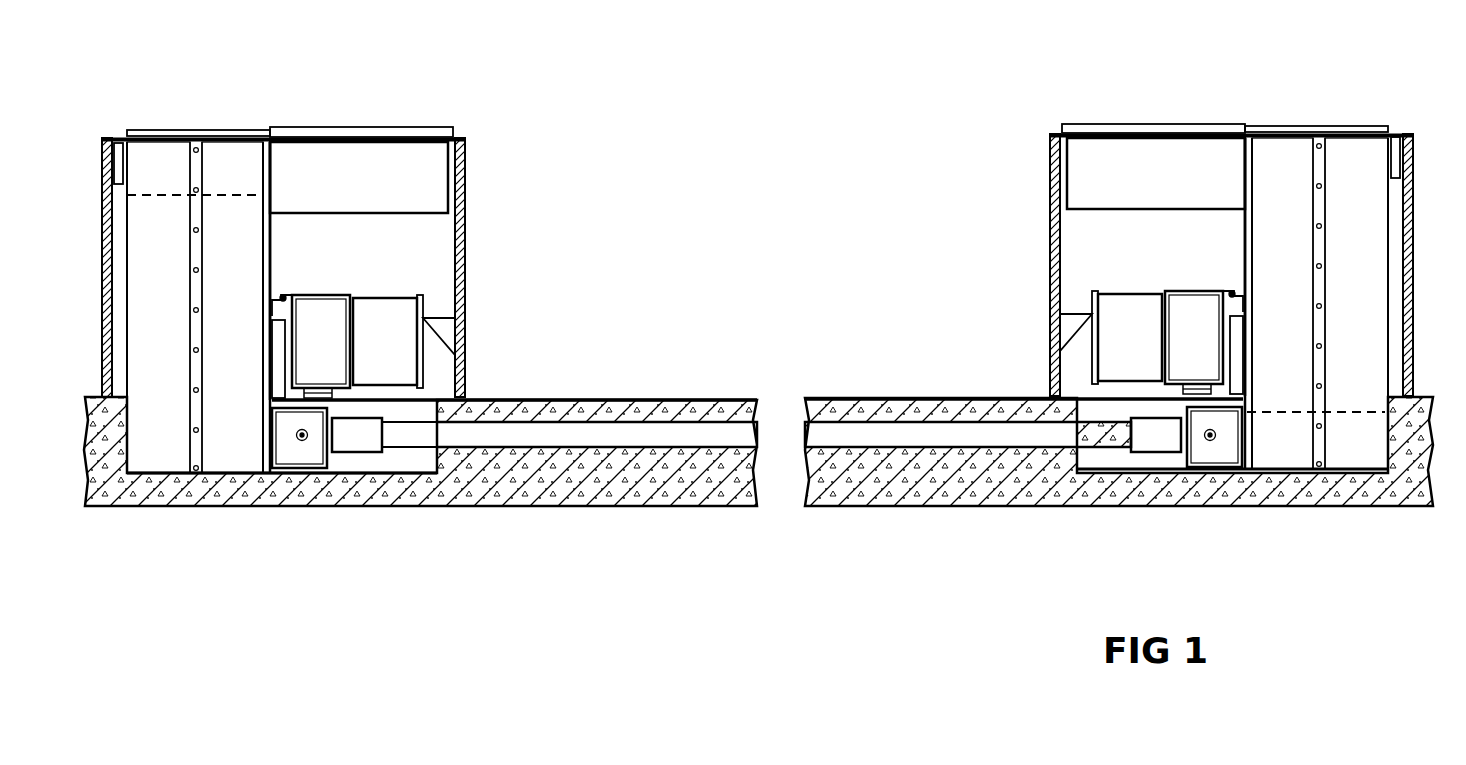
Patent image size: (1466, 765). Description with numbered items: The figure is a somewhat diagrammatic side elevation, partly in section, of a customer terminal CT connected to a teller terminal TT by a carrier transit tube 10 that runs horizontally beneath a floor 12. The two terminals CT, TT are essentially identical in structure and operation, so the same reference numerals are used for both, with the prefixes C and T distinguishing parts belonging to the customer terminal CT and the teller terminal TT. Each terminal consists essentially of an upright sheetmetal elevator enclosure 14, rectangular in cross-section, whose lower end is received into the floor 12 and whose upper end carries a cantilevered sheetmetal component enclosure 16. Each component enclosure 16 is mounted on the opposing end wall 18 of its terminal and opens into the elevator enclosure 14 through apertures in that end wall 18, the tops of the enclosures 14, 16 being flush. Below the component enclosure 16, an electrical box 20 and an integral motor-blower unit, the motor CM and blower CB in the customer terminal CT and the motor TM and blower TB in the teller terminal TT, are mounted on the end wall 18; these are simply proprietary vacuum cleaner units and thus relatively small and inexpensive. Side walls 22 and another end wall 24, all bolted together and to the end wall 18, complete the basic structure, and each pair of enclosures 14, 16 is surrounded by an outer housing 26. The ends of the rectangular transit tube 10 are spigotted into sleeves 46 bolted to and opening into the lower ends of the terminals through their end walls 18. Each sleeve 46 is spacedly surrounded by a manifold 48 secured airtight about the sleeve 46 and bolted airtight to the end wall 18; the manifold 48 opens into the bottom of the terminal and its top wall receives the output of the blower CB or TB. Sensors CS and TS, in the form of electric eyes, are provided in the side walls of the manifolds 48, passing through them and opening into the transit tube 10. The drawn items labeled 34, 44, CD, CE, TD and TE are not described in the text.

The carrier transit tube 10 is at (690, 426).
The floor 12 is at (660, 506).
The elevator enclosure 14 is at (246, 311).
The component enclosure 16 is at (387, 180).
The end wall 18 is at (263, 171).
The electrical box 20 is at (277, 358).
The side wall 22 is at (267, 208).
The end wall 24 is at (130, 293).
The outer housing 26 is at (108, 302).
The top cover plate 34 is at (392, 128).
The door latch 44 is at (112, 164).
The sleeve 46 is at (366, 452).
The manifold 48 is at (278, 452).
The customer terminal CT is at (268, 54).
The customer terminal door CD is at (147, 130).
The customer terminal enclosure CE is at (170, 156).
The customer terminal blower CB is at (333, 350).
The customer terminal motor CM is at (398, 350).
The customer terminal sensor CS is at (305, 442).
The teller terminal TT is at (1241, 89).
The teller terminal door TD is at (1340, 127).
The teller terminal enclosure TE is at (1346, 408).
The teller terminal motor TM is at (1144, 348).
The teller terminal blower TB is at (1206, 348).
The teller terminal sensor TS is at (1212, 442).